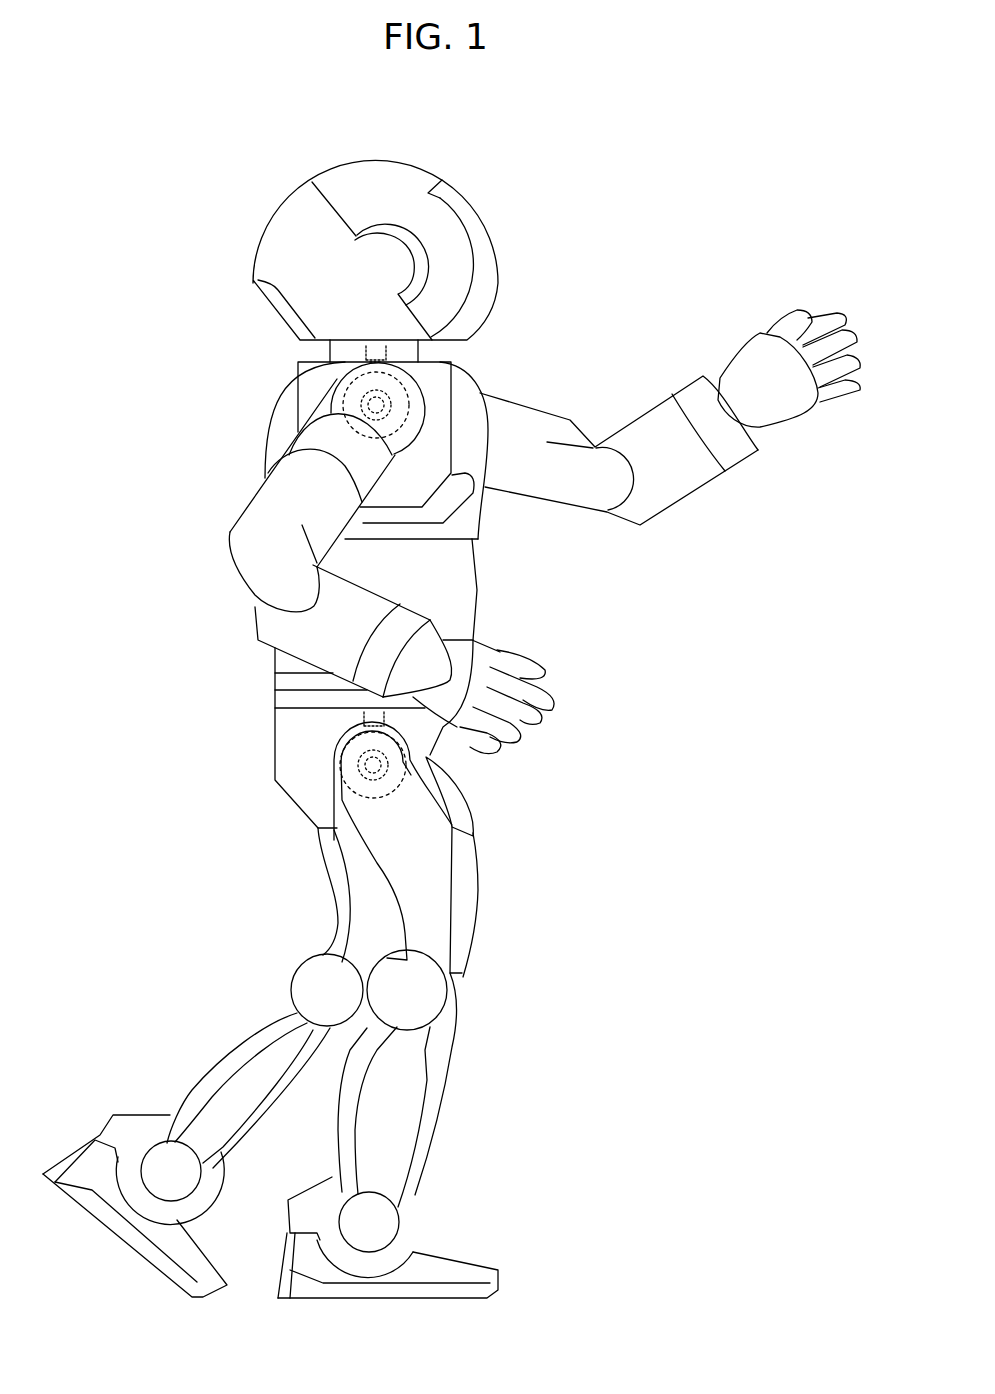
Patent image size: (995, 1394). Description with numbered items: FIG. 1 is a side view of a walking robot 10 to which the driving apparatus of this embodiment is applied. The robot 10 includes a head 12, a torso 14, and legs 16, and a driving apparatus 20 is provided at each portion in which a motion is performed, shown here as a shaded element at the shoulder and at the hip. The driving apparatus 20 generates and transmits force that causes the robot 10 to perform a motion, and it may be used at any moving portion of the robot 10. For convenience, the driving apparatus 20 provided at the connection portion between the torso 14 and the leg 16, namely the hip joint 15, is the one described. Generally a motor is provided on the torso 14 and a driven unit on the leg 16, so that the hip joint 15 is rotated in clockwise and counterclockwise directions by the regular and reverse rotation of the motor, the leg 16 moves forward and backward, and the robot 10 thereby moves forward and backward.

The robot 10 is at (748, 147).
The head 12 is at (482, 235).
The torso 14 is at (475, 522).
The hip joint 15 is at (327, 751).
The leg 16 is at (437, 1093).
The driving apparatus 20 is at (334, 395).